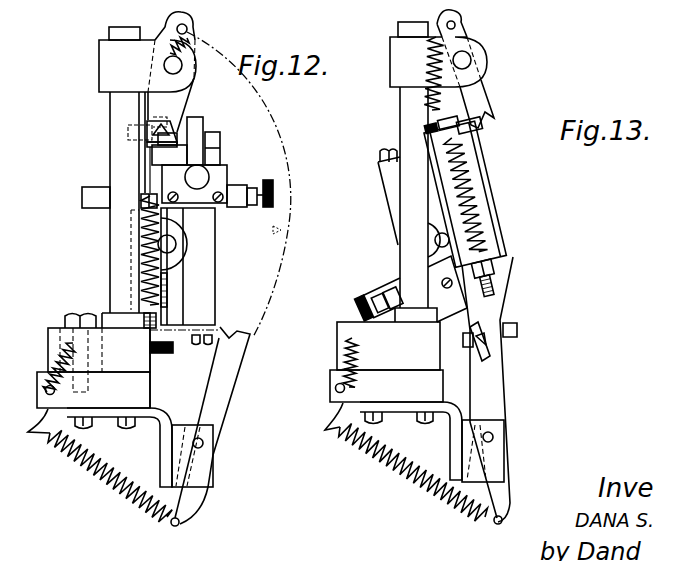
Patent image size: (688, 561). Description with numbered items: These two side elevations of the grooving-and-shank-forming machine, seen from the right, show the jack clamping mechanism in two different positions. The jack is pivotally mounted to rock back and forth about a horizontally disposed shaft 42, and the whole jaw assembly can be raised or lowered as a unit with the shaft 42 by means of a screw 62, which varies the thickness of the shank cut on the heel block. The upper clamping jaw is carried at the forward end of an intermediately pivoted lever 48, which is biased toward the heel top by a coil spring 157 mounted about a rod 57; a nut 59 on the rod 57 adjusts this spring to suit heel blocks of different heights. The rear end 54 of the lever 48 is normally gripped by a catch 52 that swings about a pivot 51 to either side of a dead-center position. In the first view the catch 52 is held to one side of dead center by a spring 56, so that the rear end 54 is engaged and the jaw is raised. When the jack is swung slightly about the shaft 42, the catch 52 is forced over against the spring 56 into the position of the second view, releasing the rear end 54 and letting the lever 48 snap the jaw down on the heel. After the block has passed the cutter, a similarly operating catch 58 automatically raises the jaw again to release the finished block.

In FIG. 12, the shaft 42 is at (171, 244).
In FIG. 13, the shaft 42 is at (447, 238).
In FIG. 12, the lever 48 is at (168, 157).
In FIG. 12, the pivot 51 is at (182, 64).
In FIG. 13, the pivot 51 is at (467, 58).
In FIG. 12, the catch 52 is at (176, 102).
In FIG. 13, the catch 52 is at (482, 100).
In FIG. 12, the rear end of the lever 54 is at (148, 126).
In FIG. 13, the rear end of the lever 54 is at (486, 344).
In FIG. 12, the spring 56 is at (186, 44).
In FIG. 13, the spring 56 is at (433, 68).
In FIG. 12, the rod 57 is at (138, 227).
In FIG. 13, the rod 57 is at (488, 297).
In FIG. 12, the catch 58 is at (224, 397).
In FIG. 13, the catch 58 is at (499, 404).
In FIG. 12, the nut 59 is at (163, 332).
In FIG. 13, the nut 59 is at (482, 146).
In FIG. 12, the screw 62 is at (163, 303).
In FIG. 12, the compression spring 157 is at (143, 266).
In FIG. 13, the compression spring 157 is at (478, 222).